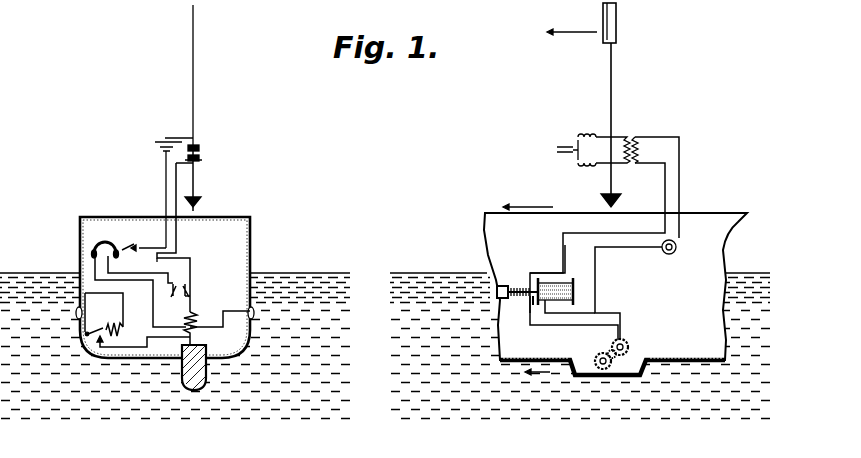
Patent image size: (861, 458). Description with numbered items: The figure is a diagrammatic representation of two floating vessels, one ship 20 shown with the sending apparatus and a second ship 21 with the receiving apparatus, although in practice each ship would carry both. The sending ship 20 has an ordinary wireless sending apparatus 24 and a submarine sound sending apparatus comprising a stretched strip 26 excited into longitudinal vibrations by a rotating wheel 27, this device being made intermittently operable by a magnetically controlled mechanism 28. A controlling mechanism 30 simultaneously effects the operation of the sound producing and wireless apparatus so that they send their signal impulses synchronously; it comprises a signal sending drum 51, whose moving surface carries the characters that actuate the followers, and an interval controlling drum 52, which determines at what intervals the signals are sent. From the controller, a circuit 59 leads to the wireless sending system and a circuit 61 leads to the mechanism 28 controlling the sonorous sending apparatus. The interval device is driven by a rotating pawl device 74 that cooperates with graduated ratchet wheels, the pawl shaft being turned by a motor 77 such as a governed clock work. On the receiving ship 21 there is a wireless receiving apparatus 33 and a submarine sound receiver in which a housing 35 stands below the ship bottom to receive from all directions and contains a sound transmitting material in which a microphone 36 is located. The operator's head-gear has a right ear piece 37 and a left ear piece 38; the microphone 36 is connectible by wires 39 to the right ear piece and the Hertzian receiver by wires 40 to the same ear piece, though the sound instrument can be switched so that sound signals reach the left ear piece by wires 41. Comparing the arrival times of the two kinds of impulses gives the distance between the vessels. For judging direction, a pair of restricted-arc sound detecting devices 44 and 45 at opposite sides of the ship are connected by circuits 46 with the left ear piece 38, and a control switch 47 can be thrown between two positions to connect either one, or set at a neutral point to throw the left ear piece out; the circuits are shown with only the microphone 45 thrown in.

The sending ship 20 is at (713, 225).
The receiving ship 21 is at (253, 233).
The wireless sending apparatus 24 is at (562, 106).
The stretched strip 26 is at (588, 368).
The rotating wheel 27 is at (598, 355).
The magnetically controlled mechanism 28 is at (630, 345).
The controlling mechanism 30 is at (562, 279).
The wireless receiving apparatus 33 is at (194, 126).
The housing 35 is at (201, 388).
The microphone 36 is at (188, 387).
The right ear piece 37 is at (121, 244).
The left ear piece 38 is at (95, 248).
The wires 39 is at (190, 290).
The wires 40 is at (176, 231).
The wires 41 is at (151, 268).
The restricted-arc sound detecting device 44 is at (255, 309).
The restricted-arc sound detecting device 45 is at (77, 310).
The circuits 46 is at (100, 287).
The control switch 47 is at (90, 346).
The signal sending drum 51 is at (555, 283).
The interval controlling drum 52 is at (514, 285).
The circuit 59 is at (597, 292).
The circuit 61 is at (626, 319).
The rotating pawl device 74 is at (528, 304).
The motor 77 is at (514, 296).